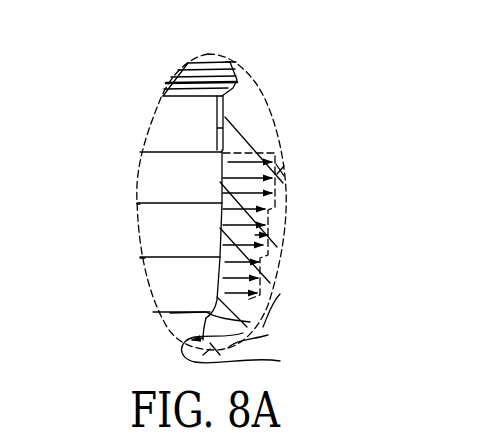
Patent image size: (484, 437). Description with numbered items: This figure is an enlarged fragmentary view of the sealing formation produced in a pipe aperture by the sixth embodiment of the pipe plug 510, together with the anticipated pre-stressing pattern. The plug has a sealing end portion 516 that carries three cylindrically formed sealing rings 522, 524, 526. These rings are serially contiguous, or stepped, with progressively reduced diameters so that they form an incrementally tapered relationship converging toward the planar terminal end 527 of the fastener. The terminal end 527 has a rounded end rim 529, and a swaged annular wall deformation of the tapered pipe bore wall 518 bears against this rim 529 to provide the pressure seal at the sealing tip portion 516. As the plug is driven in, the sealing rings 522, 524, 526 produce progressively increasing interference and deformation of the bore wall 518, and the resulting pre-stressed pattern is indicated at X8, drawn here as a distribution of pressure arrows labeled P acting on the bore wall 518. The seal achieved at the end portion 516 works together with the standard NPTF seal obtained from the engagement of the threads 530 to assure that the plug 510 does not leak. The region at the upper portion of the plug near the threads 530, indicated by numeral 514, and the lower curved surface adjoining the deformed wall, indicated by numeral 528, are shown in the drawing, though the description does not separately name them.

The pipe plug 510 is at (107, 125).
The cap 514 is at (173, 78).
The sealing end portion 516 is at (128, 228).
The tapered pipe bore wall 518 is at (254, 357).
The sealing ring 522 is at (140, 175).
The sealing ring 524 is at (143, 245).
The sealing ring 526 is at (158, 285).
The planar terminal end 527 is at (170, 319).
The lower curved surface 528 is at (268, 335).
The rounded end rim 529 is at (280, 294).
The threads 530 is at (237, 63).
The pressure distribution P is at (291, 232).
The pre-stressed pattern X8 is at (279, 162).